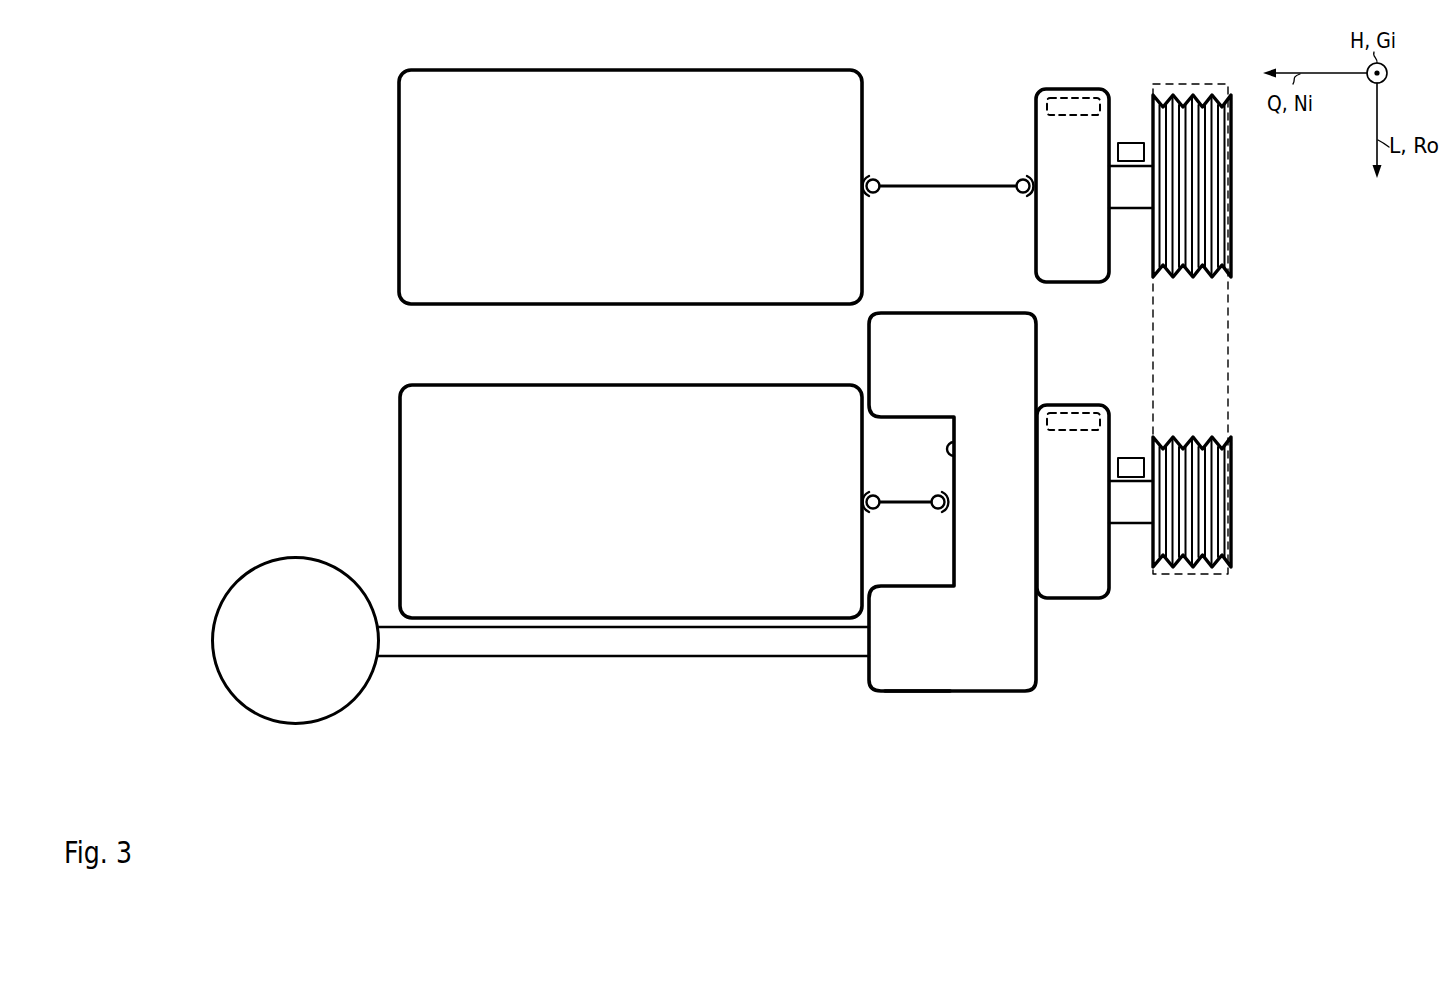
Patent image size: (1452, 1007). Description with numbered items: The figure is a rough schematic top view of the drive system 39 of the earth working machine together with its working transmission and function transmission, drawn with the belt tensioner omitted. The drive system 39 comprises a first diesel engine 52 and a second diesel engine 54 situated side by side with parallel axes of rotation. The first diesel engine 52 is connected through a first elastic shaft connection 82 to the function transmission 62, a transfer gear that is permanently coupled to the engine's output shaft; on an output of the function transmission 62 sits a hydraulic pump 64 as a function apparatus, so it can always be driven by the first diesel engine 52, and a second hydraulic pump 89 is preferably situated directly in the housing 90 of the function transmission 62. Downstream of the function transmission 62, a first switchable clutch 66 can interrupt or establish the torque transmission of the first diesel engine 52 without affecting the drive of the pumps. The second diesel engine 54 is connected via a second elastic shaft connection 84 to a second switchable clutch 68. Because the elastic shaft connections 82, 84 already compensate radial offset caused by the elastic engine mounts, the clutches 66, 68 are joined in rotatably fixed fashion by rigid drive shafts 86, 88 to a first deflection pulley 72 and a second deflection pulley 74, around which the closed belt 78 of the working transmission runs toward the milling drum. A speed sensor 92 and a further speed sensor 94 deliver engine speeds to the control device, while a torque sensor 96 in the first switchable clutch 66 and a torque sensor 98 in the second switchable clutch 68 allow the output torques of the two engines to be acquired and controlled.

The drive system 39 is at (221, 133).
The first diesel engine 52 is at (432, 450).
The second diesel engine 54 is at (628, 288).
The function transmission 62 is at (996, 676).
The hydraulic pump 64 is at (270, 572).
The first switchable clutch 66 is at (1073, 600).
The second switchable clutch 68 is at (1072, 270).
The first deflection pulley 72 is at (1215, 500).
The second deflection pulley 74 is at (1215, 185).
The belt 78 is at (1228, 371).
The first elastic shaft connection 82 is at (907, 497).
The second elastic shaft connection 84 is at (946, 180).
The rigid drive shaft 86 is at (1131, 530).
The rigid drive shaft 88 is at (1132, 213).
The second hydraulic pump 89 is at (913, 676).
The housing 90 is at (958, 447).
The speed sensor 92 is at (1131, 466).
The speed sensor 94 is at (1131, 150).
The torque sensor 96 is at (1074, 418).
The torque sensor 98 is at (1074, 103).